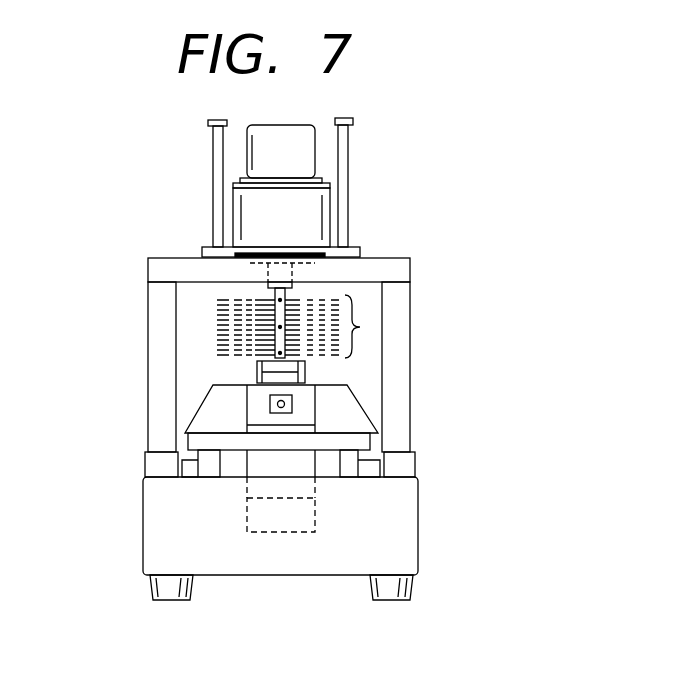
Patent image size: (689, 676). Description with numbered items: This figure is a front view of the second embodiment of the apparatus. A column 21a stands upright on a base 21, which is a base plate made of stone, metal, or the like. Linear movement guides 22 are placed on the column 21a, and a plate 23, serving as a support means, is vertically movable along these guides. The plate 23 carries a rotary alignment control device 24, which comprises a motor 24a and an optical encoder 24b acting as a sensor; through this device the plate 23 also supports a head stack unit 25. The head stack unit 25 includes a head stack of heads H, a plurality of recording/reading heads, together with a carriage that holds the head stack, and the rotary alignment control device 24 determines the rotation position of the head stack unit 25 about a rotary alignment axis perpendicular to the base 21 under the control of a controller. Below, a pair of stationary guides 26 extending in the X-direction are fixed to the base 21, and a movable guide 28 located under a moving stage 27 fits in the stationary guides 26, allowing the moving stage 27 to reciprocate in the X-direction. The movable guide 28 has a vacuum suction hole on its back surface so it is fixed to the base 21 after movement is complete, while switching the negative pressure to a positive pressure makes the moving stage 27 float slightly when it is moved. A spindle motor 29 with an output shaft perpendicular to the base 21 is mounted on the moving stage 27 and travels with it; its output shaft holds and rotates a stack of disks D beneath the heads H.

The base 21 is at (378, 520).
The column 21a is at (397, 395).
The linear movement guides 22 is at (212, 167).
The plate 23 is at (360, 243).
The rotary alignment control device 24 is at (366, 173).
The motor 24a is at (302, 220).
The optical encoder 24b is at (290, 148).
The head stack unit 25 is at (257, 365).
The stationary guides 26 is at (183, 472).
The moving stage 27 is at (200, 441).
The movable guide 28 is at (207, 470).
The spindle motor 29 is at (280, 520).
The heads H is at (270, 295).
The disks D is at (360, 327).